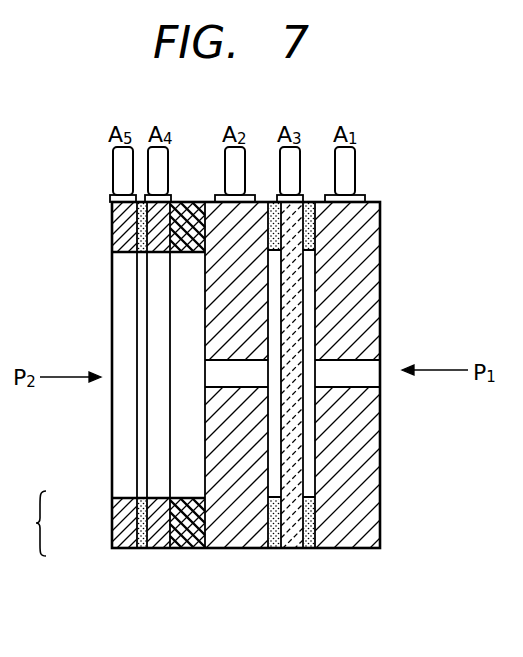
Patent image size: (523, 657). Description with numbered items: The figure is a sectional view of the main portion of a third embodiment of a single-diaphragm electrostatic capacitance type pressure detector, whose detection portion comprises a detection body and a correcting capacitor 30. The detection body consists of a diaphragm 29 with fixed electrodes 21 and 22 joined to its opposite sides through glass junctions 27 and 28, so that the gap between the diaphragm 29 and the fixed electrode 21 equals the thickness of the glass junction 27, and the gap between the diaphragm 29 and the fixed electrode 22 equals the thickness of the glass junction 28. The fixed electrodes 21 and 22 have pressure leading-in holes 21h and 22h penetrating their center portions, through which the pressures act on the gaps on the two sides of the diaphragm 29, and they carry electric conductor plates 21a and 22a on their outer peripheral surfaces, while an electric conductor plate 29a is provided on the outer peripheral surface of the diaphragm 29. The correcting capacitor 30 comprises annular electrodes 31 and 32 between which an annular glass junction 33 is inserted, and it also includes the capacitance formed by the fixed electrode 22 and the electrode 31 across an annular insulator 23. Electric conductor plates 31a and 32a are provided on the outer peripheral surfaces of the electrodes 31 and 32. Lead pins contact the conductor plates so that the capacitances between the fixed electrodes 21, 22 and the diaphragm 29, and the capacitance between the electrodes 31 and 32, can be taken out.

The fixed electrode 21 is at (365, 330).
The electric conductor plate 21a is at (365, 194).
The pressure leading-in hole 21h is at (348, 388).
The fixed electrode 22 is at (262, 318).
The electric conductor plate 22a is at (251, 196).
The pressure leading-in hole 22h is at (226, 388).
The annular insulator 23 is at (191, 549).
The glass junction 27 is at (311, 549).
The glass junction 28 is at (273, 549).
The diaphragm 29 is at (302, 288).
The electric conductor plate 29a is at (310, 198).
The correcting capacitor 30 is at (110, 299).
The annular electrode 31 is at (153, 515).
The electric conductor plate 31a is at (172, 199).
The annular electrode 32 is at (120, 533).
The electric conductor plate 32a is at (110, 201).
The annular glass junction 33 is at (141, 549).